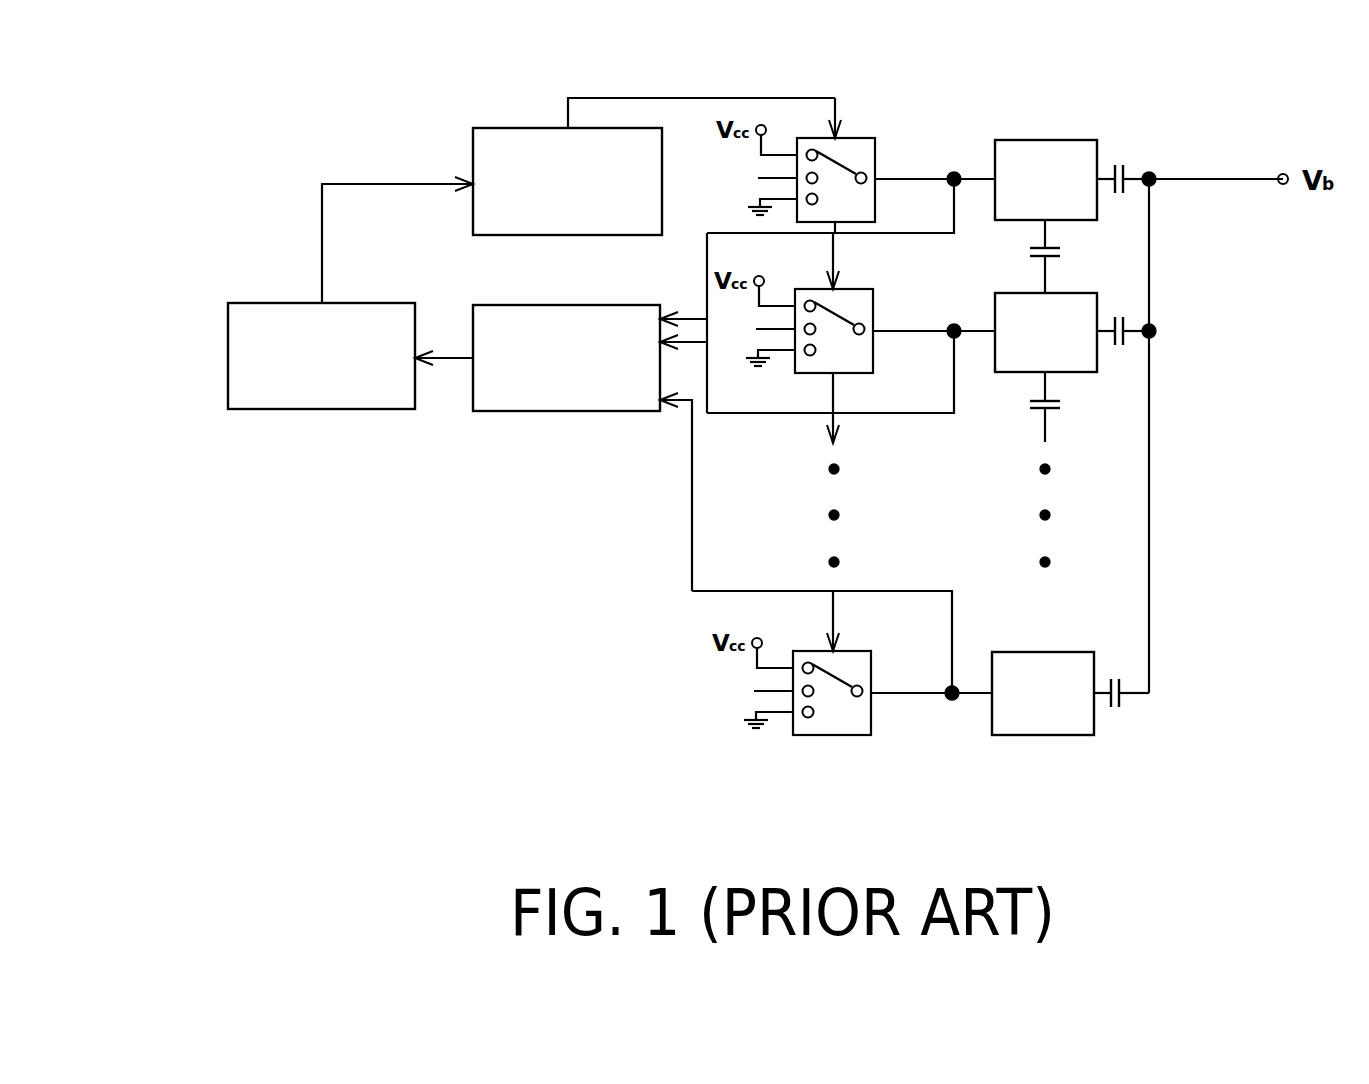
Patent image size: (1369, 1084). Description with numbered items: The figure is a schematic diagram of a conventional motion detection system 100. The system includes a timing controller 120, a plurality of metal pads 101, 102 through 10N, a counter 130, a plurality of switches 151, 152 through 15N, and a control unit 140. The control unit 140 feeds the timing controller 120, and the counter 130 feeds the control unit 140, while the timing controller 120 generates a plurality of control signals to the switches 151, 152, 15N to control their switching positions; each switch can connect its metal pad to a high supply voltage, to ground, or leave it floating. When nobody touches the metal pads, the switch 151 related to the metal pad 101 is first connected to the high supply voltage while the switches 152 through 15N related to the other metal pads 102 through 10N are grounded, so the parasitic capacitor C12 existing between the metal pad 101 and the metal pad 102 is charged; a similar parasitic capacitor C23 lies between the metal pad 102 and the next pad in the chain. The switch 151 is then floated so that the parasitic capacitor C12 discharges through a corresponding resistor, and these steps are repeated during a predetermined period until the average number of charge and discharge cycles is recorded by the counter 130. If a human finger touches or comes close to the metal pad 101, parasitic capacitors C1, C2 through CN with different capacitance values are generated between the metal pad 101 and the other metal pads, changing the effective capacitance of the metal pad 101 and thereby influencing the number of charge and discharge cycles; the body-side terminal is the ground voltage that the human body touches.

The motion detection system 100 is at (152, 793).
The timing controller 120 is at (508, 126).
The counter 130 is at (547, 411).
The control unit 140 is at (325, 409).
The switch 151 is at (869, 136).
The switch 152 is at (873, 291).
The switch 15N is at (868, 646).
The metal pad 101 is at (1024, 200).
The metal pad 102 is at (1024, 352).
The metal pad 10N is at (1019, 713).
The parasitic capacitor C1 is at (1123, 162).
The parasitic capacitor C2 is at (1123, 347).
The parasitic capacitor C12 is at (1067, 256).
The parasitic capacitor C23 is at (1067, 407).
The parasitic capacitor CN is at (1121, 710).